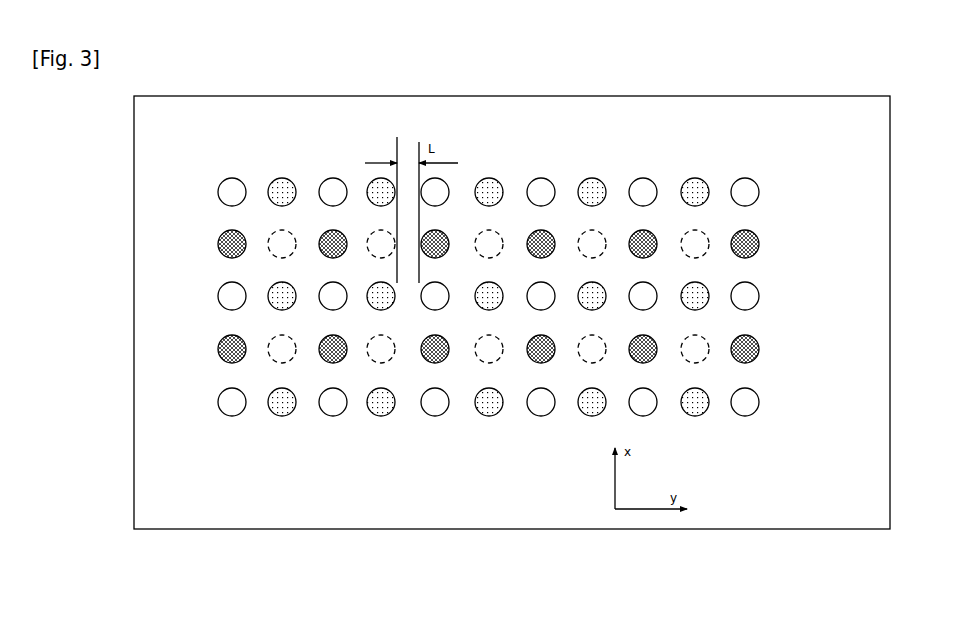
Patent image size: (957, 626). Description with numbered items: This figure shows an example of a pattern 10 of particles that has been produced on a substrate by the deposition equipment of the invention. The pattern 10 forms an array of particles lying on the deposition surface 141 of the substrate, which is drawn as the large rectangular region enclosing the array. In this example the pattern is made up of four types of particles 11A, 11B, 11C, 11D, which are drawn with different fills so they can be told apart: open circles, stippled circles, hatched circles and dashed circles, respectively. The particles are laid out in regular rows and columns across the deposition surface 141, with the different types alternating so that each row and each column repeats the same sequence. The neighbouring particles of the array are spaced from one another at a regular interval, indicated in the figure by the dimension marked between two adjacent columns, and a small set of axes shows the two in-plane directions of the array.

The pattern 10 is at (297, 440).
The first type of particle 11A is at (242, 167).
The second type of particle 11B is at (294, 172).
The third type of particle 11C is at (218, 240).
The fourth type of particle 11D is at (230, 272).
The deposition surface 141 is at (175, 482).